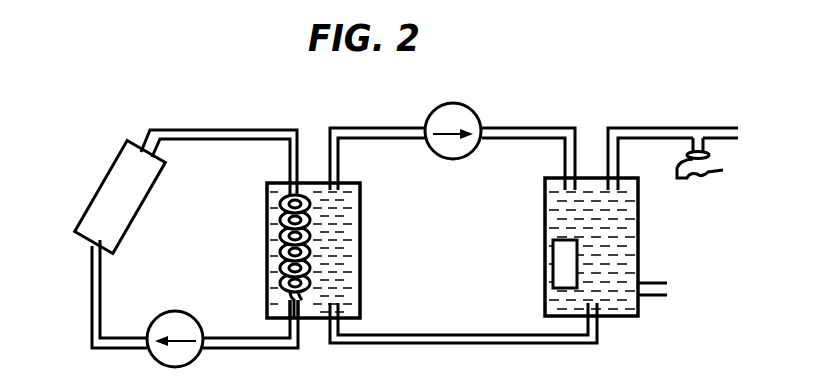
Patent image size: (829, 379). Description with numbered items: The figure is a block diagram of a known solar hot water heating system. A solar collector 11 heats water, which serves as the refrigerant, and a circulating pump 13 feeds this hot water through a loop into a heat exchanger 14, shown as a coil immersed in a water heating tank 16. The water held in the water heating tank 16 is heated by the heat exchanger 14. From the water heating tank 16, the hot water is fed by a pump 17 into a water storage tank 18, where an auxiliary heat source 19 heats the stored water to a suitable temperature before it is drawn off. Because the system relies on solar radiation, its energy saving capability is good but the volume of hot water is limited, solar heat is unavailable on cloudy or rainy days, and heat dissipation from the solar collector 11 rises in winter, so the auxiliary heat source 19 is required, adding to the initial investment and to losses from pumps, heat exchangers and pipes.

The solar collector 11 is at (123, 153).
The circulating pump 13 is at (188, 313).
The heat exchanger 14 is at (267, 230).
The water heating tank 16 is at (350, 223).
The pump 17 is at (473, 107).
The water storage tank 18 is at (622, 230).
The auxiliary heat source 19 is at (553, 253).